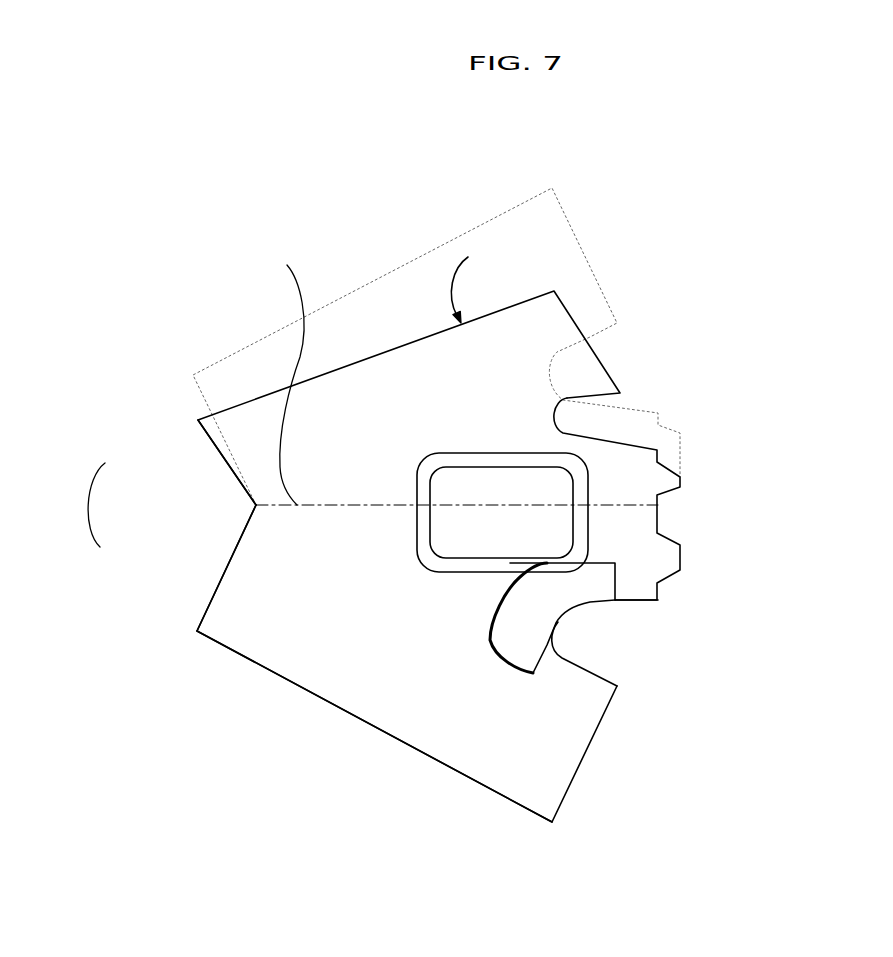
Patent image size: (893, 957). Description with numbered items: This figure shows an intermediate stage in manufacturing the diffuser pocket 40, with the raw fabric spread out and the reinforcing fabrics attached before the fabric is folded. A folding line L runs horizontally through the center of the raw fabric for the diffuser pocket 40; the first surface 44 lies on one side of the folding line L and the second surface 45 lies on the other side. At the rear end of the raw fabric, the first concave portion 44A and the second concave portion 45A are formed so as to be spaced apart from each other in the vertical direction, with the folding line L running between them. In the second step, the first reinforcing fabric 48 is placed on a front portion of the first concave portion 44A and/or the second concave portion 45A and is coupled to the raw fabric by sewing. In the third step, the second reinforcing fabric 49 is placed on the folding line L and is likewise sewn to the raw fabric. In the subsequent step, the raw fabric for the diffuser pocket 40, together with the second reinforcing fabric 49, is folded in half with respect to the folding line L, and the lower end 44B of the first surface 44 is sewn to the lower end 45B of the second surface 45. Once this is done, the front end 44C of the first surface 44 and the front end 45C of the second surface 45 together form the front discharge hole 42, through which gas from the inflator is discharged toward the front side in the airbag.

The diffuser pocket 40 is at (150, 337).
The front discharge hole 42 is at (78, 505).
The first surface 44 is at (375, 388).
The first concave portion 44A is at (560, 432).
The lower end of the first surface 44B is at (442, 330).
The front end of the first surface 44C is at (227, 468).
The second surface 45 is at (348, 658).
The second concave portion 45A is at (558, 622).
The lower end of the second surface 45B is at (410, 745).
The front end of the second surface 45C is at (227, 573).
The first reinforcing fabric 48 is at (557, 590).
The second reinforcing fabric 49 is at (457, 487).
The folding line L is at (291, 377).